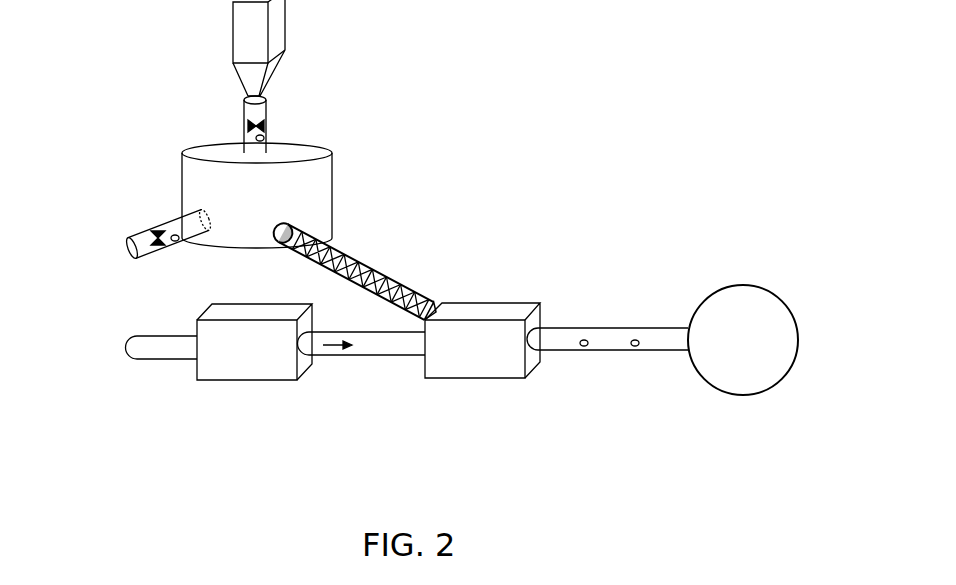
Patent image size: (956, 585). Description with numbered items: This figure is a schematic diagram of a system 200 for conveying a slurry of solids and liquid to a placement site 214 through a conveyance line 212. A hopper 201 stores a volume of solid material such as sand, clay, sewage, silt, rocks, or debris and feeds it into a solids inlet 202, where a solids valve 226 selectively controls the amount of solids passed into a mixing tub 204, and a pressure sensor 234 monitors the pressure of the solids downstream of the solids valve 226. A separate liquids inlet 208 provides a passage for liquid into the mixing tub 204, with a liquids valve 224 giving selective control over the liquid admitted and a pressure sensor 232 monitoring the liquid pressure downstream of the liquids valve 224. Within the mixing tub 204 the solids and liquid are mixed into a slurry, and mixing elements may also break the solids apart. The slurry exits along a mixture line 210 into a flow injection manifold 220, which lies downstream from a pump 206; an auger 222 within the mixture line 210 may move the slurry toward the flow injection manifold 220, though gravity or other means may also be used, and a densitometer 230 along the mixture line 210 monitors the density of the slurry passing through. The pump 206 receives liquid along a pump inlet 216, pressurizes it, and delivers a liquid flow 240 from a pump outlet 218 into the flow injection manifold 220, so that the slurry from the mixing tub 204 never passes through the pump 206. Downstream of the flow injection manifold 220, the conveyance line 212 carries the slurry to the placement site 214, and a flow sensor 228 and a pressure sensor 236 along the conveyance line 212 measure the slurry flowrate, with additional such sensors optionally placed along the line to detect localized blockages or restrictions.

The system 200 is at (104, 62).
The hopper 201 is at (245, 55).
The solids inlet 202 is at (243, 98).
The mixing tub 204 is at (185, 165).
The pump 206 is at (250, 313).
The liquids inlet 208 is at (135, 246).
The mixture line 210 is at (360, 252).
The conveyance line 212 is at (607, 335).
The placement site 214 is at (770, 302).
The pump inlet 216 is at (142, 341).
The pump outlet 218 is at (380, 350).
The flow injection manifold 220 is at (478, 308).
The auger 222 is at (380, 277).
The liquids valve 224 is at (156, 232).
The solids valve 226 is at (248, 127).
The flow sensor 228 is at (587, 346).
The densitometer 230 is at (293, 222).
The pressure sensor 232 is at (178, 241).
The pressure sensor 234 is at (263, 136).
The pressure sensor 236 is at (638, 346).
The liquid flow 240 is at (332, 349).